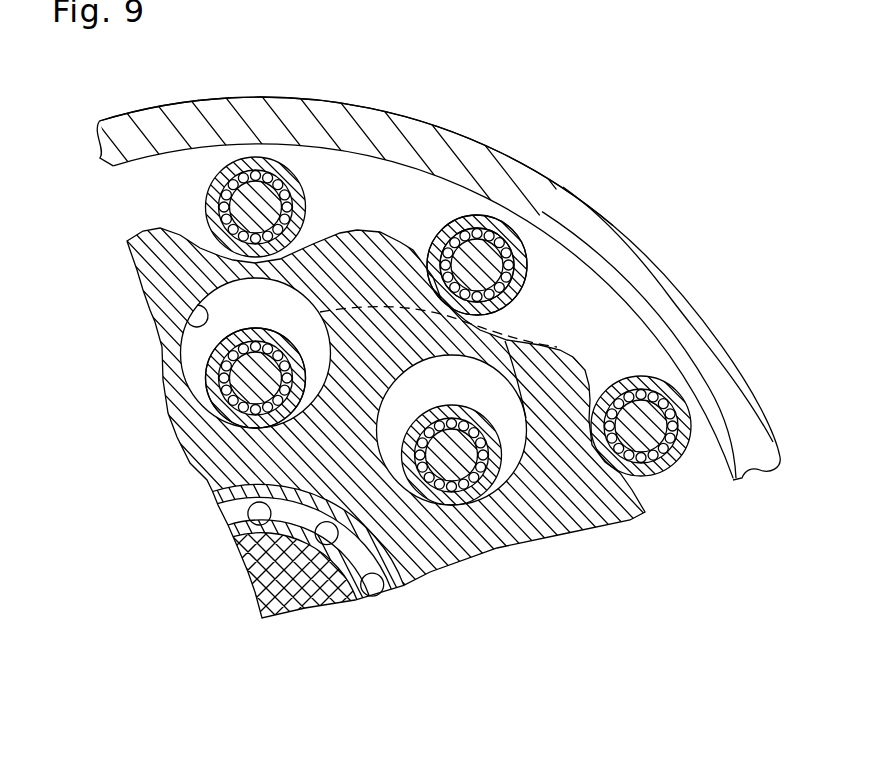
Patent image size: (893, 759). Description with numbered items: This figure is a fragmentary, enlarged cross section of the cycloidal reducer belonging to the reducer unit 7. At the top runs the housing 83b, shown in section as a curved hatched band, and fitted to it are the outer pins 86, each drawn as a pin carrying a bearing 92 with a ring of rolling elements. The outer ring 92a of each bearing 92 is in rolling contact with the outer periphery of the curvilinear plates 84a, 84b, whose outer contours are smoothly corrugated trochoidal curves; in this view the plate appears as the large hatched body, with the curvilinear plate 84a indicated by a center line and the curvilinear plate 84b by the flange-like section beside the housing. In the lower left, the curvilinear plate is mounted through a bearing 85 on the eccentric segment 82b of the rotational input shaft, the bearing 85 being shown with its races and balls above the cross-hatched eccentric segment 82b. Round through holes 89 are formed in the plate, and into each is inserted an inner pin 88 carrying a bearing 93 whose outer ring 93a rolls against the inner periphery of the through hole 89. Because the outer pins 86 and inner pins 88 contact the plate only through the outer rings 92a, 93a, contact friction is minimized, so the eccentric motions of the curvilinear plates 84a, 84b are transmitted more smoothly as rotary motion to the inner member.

The reducer unit 7 is at (190, 97).
The housing 83b is at (252, 112).
The outer pins 86 is at (258, 208).
The bearings 92 is at (497, 236).
The outer rings 92a is at (512, 247).
The curvilinear plate 84a is at (548, 343).
The curvilinear plate 84b is at (563, 371).
The through holes 89 is at (190, 323).
The outer rings 93a is at (223, 355).
The bearings 93 is at (232, 388).
The inner pins 88 is at (247, 390).
The eccentric segment 82b is at (303, 586).
The bearings 85 is at (367, 588).